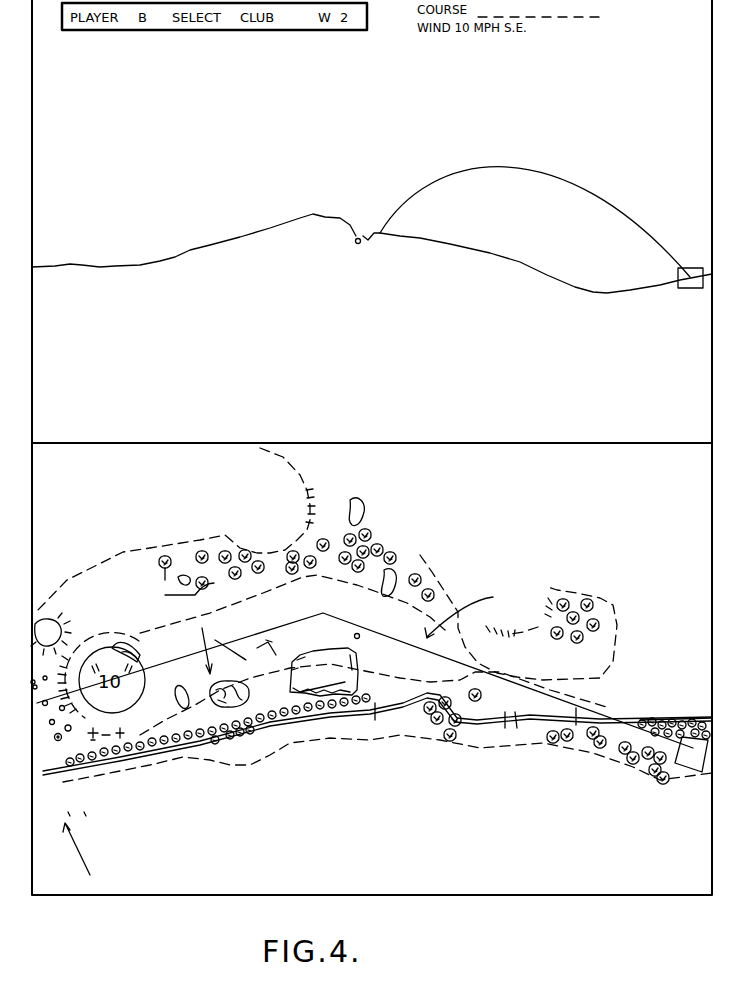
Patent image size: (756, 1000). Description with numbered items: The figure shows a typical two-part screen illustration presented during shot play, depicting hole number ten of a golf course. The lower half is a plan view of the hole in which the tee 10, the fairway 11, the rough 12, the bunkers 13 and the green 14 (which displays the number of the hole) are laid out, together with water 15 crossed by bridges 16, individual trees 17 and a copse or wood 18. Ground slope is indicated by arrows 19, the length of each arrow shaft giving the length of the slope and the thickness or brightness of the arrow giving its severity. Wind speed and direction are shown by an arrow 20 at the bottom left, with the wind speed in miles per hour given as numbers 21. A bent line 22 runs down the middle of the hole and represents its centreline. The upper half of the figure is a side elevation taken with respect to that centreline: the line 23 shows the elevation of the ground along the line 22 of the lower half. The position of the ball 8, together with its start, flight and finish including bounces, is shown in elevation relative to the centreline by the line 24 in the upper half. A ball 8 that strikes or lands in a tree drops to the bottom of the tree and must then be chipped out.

The ball 8 is at (355, 236).
The tee 10 is at (690, 760).
The fairway 11 is at (415, 618).
The rough 12 is at (134, 565).
The bunkers 13 is at (393, 566).
The green 14 is at (138, 660).
The water 15 is at (452, 718).
The bridges 16 is at (578, 724).
The individual trees 17 is at (165, 582).
The copse or wood 18 is at (318, 690).
The arrows 19 is at (361, 630).
The arrow 20 is at (78, 852).
The numbers 21 is at (87, 817).
The bent line 22 is at (296, 622).
The line 23 is at (488, 255).
The line 24 is at (503, 165).